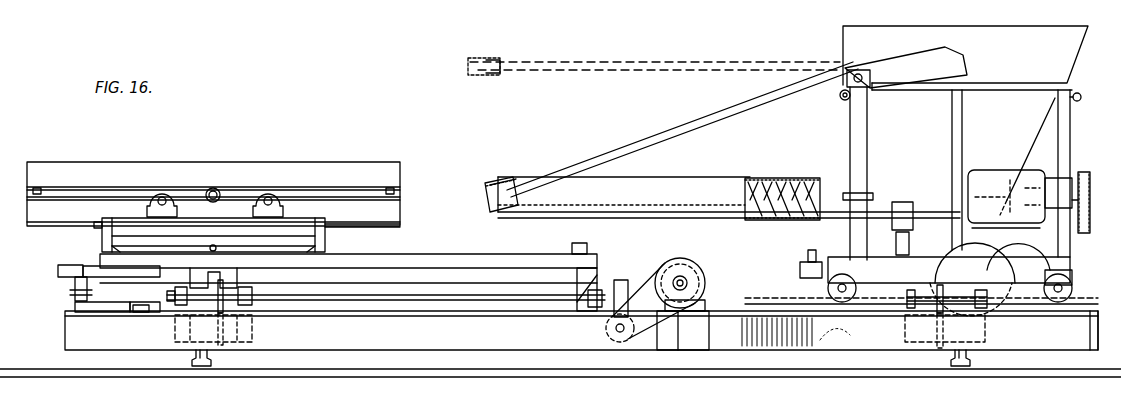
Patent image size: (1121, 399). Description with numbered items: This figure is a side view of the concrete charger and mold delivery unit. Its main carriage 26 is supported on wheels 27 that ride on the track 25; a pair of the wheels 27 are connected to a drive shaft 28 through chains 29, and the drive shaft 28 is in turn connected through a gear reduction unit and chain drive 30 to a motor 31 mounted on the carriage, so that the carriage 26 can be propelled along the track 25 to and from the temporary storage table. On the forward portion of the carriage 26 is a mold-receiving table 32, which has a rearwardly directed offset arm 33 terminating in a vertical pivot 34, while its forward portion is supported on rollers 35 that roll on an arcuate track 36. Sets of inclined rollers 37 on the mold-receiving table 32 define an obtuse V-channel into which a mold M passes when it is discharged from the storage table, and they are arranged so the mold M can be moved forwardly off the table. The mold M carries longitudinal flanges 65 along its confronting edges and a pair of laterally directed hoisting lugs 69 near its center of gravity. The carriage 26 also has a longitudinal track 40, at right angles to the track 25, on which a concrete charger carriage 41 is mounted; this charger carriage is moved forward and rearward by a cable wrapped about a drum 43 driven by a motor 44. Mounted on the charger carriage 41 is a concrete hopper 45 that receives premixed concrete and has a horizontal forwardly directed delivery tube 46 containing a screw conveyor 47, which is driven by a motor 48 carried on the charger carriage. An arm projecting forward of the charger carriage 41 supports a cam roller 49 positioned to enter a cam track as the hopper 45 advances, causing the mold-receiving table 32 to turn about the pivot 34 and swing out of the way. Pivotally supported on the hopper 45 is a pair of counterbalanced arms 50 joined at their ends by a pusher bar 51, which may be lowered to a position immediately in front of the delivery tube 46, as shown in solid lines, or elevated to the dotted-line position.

The mold M is at (305, 172).
The track 25 is at (196, 360).
The carriage 26 is at (581, 330).
The wheels 27 is at (207, 355).
The drive shaft 28 is at (346, 300).
The chains 29 is at (222, 284).
The gear reduction unit and chain drive 30 is at (640, 292).
The motor 31 is at (683, 262).
The mold-receiving table 32 is at (190, 217).
The offset arm 33 is at (480, 262).
The vertical pivot 34 is at (572, 247).
The rollers 35 is at (74, 291).
The arcuate track 36 is at (106, 304).
The inclined rollers 37 is at (162, 195).
The track 40 is at (1085, 310).
The concrete charger carriage 41 is at (818, 58).
The drum 43 is at (945, 258).
The motor 44 is at (1030, 250).
The concrete hopper 45 is at (965, 143).
The delivery tube 46 is at (695, 184).
The screw conveyor 47 is at (775, 190).
The motor 48 is at (1030, 172).
The cam roller 49 is at (805, 265).
The counterbalanced arms 50 is at (606, 60).
The pusher bar 51 is at (478, 58).
The longitudinal flanges 65 is at (358, 198).
The hoisting lugs 69 is at (215, 190).